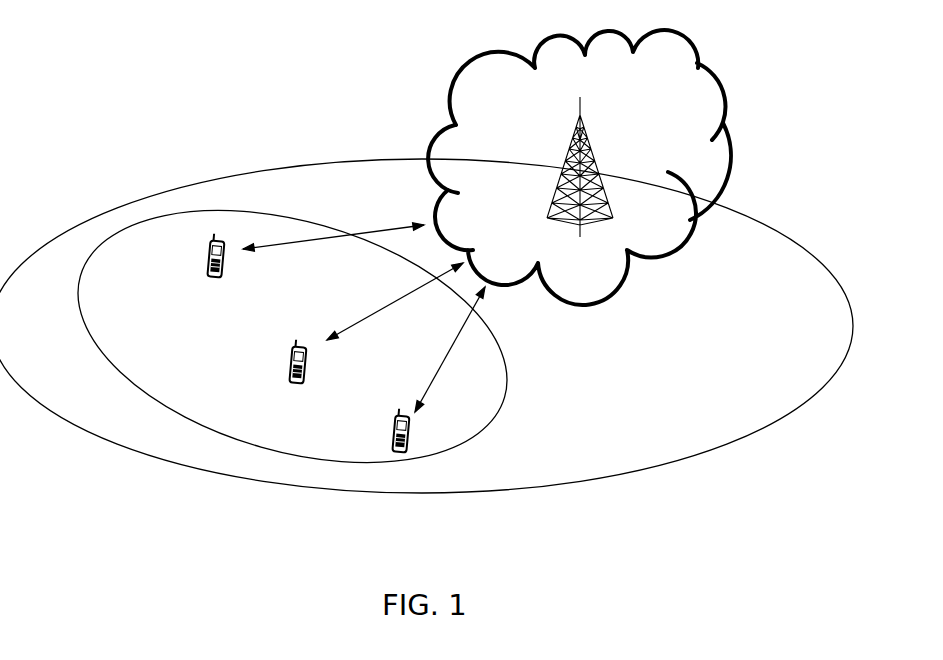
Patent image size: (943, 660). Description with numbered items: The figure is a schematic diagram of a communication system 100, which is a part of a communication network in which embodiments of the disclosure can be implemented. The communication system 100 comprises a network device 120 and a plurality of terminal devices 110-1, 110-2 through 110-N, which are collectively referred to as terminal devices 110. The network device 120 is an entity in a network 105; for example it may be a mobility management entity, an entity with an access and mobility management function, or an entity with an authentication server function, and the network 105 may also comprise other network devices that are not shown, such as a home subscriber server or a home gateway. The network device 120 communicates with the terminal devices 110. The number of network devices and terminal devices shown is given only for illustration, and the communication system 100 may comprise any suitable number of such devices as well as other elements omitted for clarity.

The communication system 100 is at (287, 87).
The network 105 is at (727, 112).
The terminal devices 110 is at (507, 382).
The terminal device 110-1 is at (205, 247).
The terminal device 110-2 is at (290, 343).
The terminal device 110-N is at (393, 422).
The network device 120 is at (582, 120).